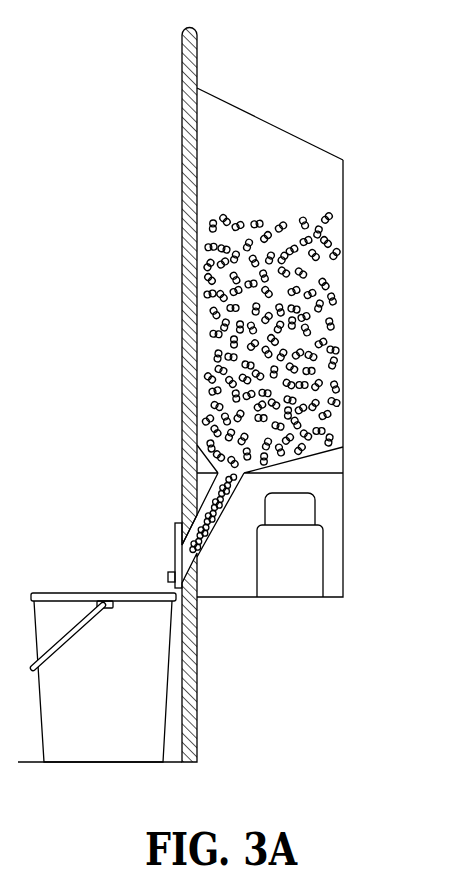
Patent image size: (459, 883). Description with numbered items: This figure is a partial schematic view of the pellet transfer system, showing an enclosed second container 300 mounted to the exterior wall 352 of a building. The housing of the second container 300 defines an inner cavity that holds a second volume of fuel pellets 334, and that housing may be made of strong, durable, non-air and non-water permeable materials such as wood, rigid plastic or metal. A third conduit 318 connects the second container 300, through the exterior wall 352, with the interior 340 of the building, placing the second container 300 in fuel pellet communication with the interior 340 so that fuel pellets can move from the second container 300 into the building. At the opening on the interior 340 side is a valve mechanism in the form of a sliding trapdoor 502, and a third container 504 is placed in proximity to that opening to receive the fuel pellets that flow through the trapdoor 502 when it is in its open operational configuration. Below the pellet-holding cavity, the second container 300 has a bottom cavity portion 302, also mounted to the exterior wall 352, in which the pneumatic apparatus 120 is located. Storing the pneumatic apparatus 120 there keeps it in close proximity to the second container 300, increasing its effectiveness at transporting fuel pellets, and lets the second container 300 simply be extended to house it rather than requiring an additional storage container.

The second container 300 is at (410, 83).
The exterior wall 352 is at (182, 143).
The fuel pellets 334 is at (318, 293).
The interior 340 is at (124, 433).
The sliding trapdoor/gate 502 is at (176, 540).
The bottom cavity portion 302 is at (343, 547).
The pneumatic apparatus 120 is at (310, 582).
The third conduit 318 is at (218, 515).
The third container 504 is at (127, 709).